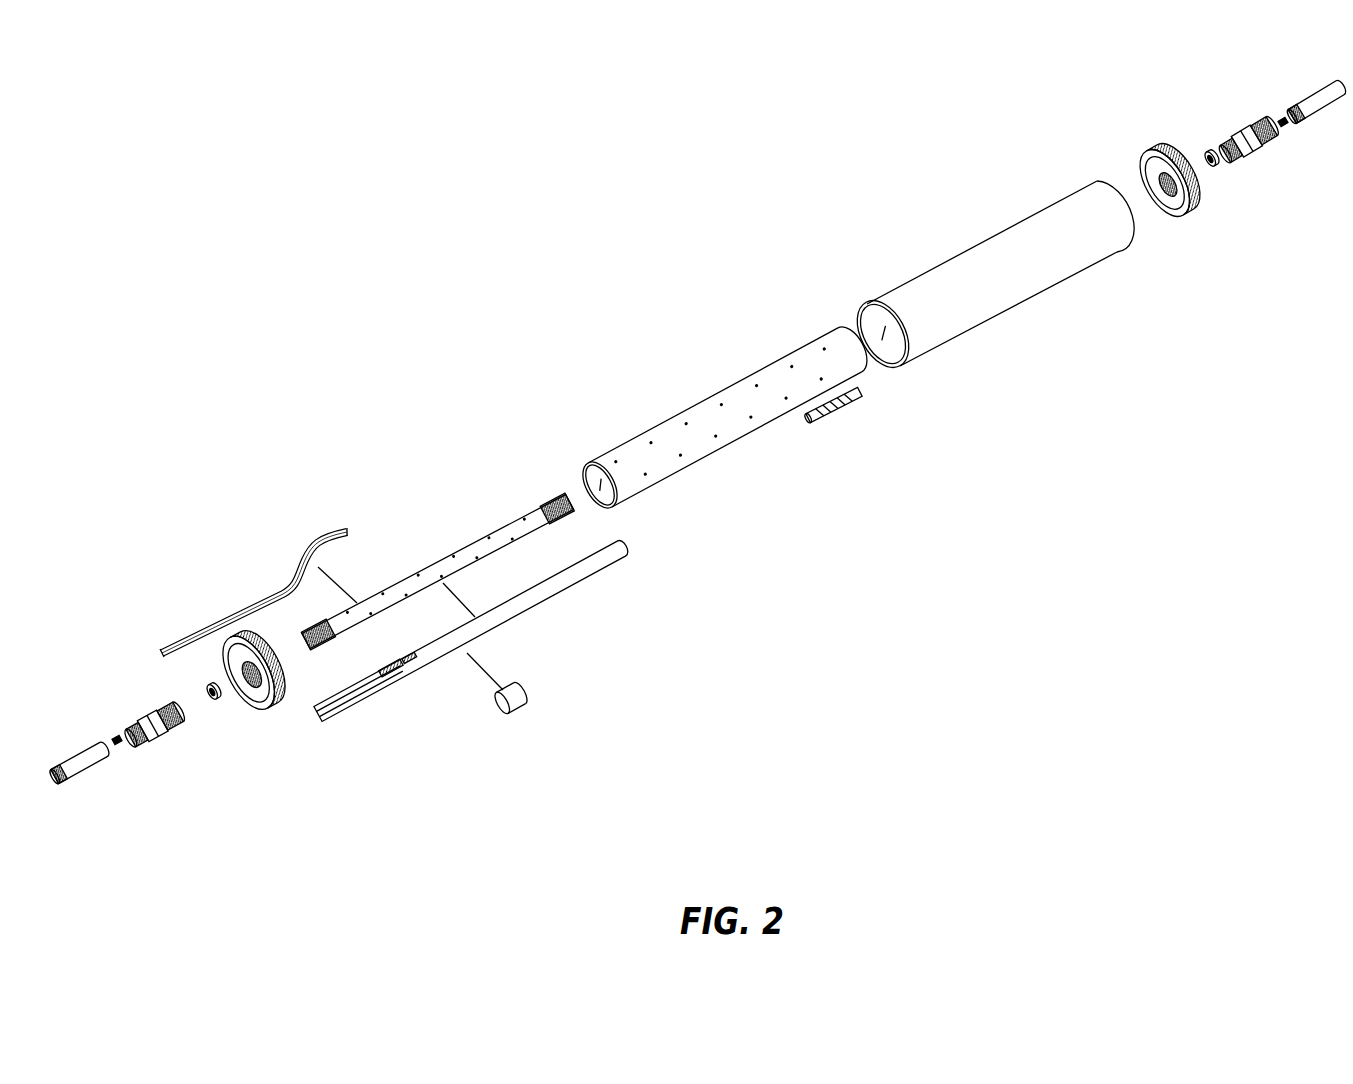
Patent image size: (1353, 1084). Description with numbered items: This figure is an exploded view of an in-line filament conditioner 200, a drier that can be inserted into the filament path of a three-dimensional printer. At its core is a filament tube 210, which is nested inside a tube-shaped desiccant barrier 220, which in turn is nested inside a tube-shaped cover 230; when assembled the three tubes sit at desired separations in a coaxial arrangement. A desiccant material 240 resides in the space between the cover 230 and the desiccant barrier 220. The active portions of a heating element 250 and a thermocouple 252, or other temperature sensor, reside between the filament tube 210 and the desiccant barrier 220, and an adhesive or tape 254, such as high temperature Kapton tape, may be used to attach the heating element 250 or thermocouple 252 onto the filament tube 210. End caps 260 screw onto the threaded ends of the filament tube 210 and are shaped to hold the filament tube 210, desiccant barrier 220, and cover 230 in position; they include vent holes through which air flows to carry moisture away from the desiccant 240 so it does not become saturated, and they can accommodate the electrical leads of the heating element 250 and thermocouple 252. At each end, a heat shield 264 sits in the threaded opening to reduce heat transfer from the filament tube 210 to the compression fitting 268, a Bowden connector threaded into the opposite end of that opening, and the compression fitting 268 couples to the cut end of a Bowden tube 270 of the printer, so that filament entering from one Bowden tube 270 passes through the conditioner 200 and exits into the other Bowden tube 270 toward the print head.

The filament conditioner 200 is at (753, 570).
The filament tube 210 is at (493, 528).
The desiccant barrier 220 is at (702, 410).
The cover 230 is at (990, 230).
The desiccant material 240 is at (837, 410).
The heating element 250 is at (528, 608).
The thermocouple 252 is at (248, 602).
The adhesive or tape 254 is at (518, 702).
The end cap 260 is at (285, 700).
The heat shield 264 is at (222, 700).
The coupling 268 is at (165, 733).
The Bowden tube 270 is at (93, 760).